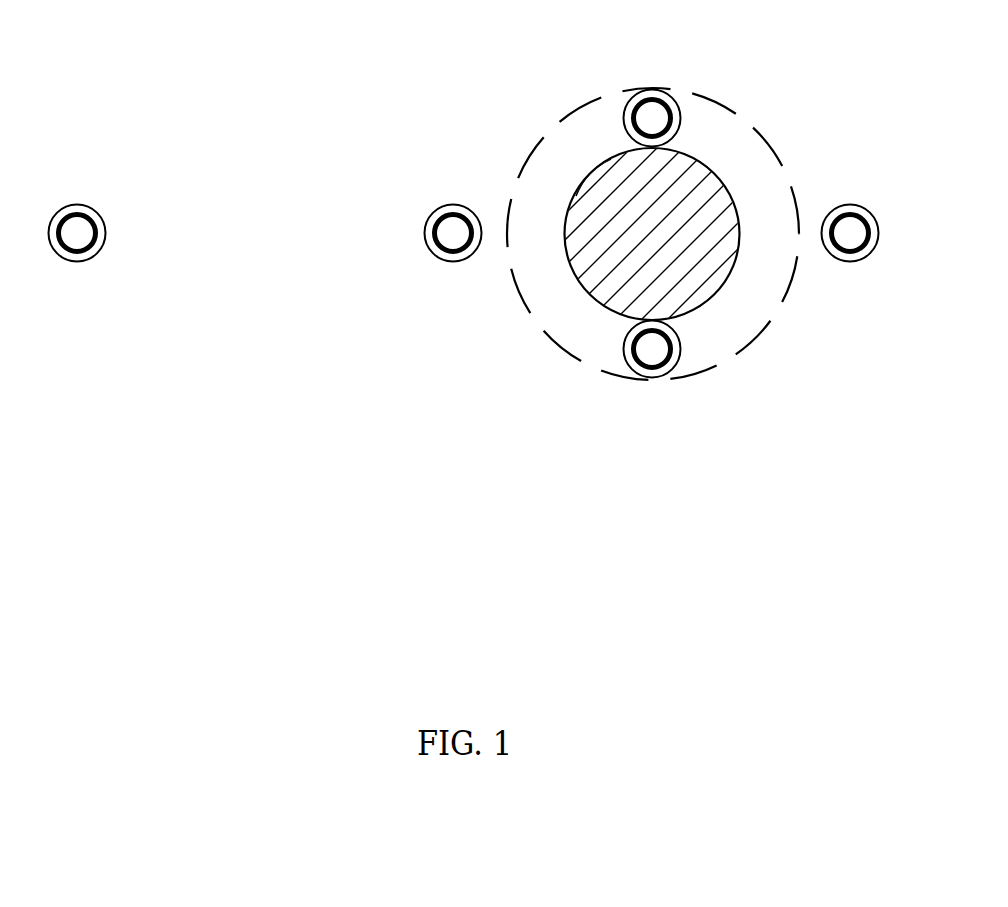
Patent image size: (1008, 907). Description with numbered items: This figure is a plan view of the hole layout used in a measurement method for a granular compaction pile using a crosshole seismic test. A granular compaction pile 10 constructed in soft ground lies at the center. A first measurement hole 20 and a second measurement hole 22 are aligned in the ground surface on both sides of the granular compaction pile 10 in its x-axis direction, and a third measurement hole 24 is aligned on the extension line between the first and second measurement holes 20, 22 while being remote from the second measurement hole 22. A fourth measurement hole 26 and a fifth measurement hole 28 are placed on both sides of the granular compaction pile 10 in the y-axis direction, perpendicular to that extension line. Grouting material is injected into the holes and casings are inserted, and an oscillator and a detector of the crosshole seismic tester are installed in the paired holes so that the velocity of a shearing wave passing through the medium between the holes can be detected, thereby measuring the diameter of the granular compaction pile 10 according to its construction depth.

The granular compaction pile 10 is at (720, 175).
The first measurement hole 20 is at (849, 205).
The second measurement hole 22 is at (451, 205).
The third measurement hole 24 is at (73, 205).
The fourth measurement hole 26 is at (648, 89).
The fifth measurement hole 28 is at (651, 379).